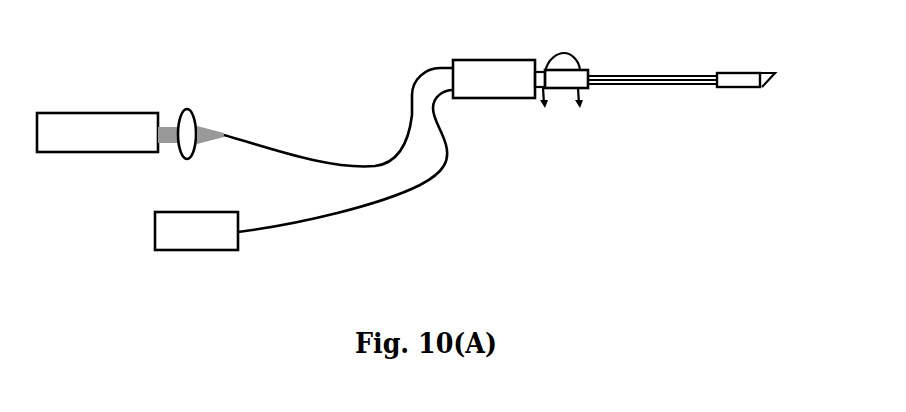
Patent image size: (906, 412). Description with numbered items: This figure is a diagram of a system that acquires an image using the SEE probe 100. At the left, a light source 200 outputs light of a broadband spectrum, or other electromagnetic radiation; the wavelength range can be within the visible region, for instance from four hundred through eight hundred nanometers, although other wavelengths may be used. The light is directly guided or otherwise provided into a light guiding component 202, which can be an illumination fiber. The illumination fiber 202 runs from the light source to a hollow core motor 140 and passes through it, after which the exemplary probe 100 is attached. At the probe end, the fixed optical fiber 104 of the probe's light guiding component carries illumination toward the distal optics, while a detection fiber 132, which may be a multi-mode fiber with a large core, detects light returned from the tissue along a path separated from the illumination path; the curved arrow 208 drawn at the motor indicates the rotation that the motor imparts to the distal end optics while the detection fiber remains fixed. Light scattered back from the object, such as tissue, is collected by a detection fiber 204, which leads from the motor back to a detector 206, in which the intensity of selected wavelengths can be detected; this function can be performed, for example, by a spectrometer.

The light source 200 is at (97, 132).
The light guiding component 202 is at (338, 117).
The detection fiber 204 is at (345, 164).
The detector 206 is at (196, 231).
The hollow core motor 140 is at (520, 66).
The rotation direction arrow 208 is at (565, 70).
The optical fiber 104 is at (652, 68).
The detection fiber 132 is at (652, 97).
The SEE probe 100 is at (746, 67).